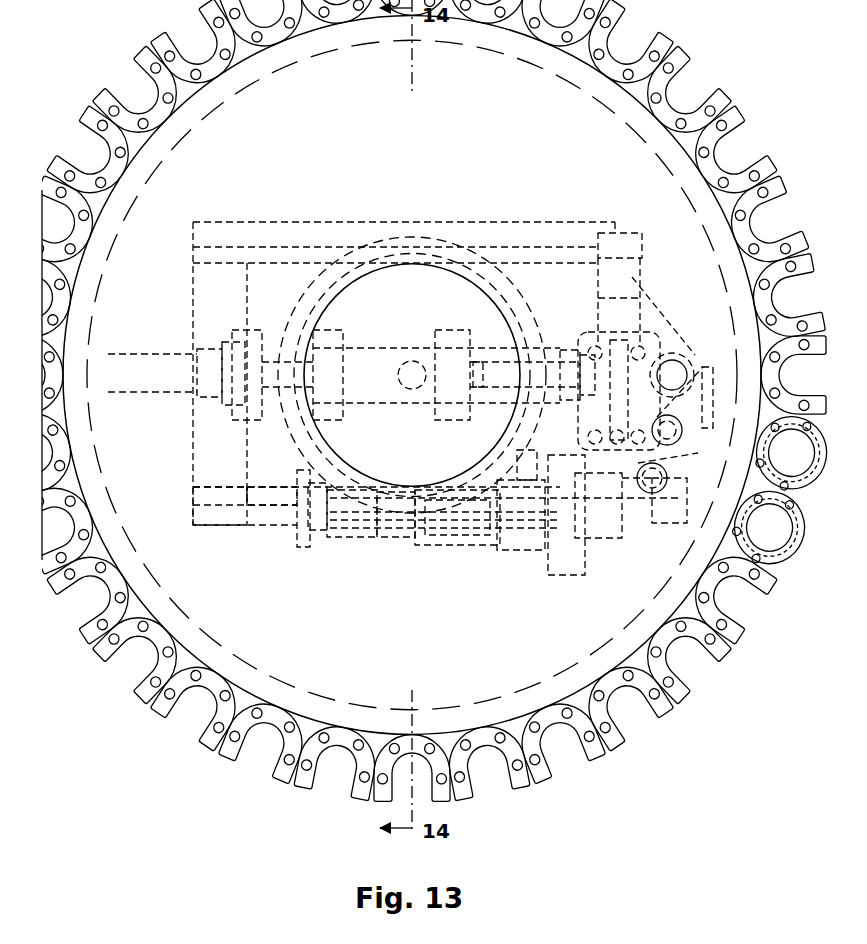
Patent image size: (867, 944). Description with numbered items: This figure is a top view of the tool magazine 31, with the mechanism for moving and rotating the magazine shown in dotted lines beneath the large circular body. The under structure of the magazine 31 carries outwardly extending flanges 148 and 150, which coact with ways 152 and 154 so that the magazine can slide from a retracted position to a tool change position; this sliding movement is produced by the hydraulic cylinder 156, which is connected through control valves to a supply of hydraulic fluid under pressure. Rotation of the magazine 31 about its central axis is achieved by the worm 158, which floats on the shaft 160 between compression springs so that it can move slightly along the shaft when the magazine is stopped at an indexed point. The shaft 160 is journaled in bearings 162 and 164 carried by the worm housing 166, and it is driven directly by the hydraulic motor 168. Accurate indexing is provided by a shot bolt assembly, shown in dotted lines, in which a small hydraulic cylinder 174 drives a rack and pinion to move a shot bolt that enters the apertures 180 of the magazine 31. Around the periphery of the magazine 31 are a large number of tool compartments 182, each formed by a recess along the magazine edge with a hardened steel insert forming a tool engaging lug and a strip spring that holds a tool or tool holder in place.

The tool magazine 31 is at (228, 775).
The outwardly extending flange 148 is at (266, 512).
The outwardly extending flange 150 is at (283, 262).
The way 152 is at (228, 517).
The way 154 is at (222, 240).
The hydraulic cylinder 156 is at (397, 352).
The worm 158 is at (425, 512).
The shaft 160 is at (355, 513).
The bearing 162 is at (318, 532).
The bearing 164 is at (500, 530).
The worm housing 166 is at (305, 547).
The hydraulic motor 168 is at (630, 540).
The hydraulic cylinder 174 is at (633, 278).
The apertures 180 is at (690, 355).
The tool compartments 182 is at (688, 660).